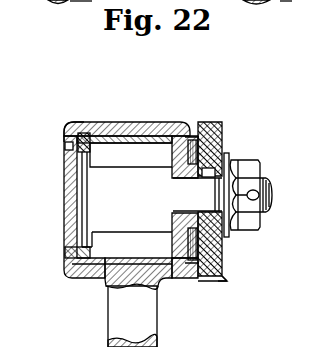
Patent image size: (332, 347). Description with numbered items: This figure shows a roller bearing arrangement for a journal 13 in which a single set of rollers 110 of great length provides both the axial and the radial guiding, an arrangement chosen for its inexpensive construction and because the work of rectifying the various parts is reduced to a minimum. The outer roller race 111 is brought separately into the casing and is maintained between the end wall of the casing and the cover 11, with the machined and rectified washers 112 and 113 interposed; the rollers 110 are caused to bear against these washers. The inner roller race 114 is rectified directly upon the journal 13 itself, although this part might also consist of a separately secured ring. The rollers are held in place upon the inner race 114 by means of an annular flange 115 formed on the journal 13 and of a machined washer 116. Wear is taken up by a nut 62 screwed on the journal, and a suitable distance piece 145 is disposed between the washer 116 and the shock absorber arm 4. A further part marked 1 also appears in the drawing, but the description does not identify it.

The sleeve 1 is at (131, 124).
The shock absorber arm 4 is at (226, 280).
The cover 11 is at (76, 211).
The journal 13 is at (112, 272).
The nut 62 is at (232, 163).
The set of rollers 110 is at (171, 276).
The outer roller race 111 is at (134, 136).
The washer 112 is at (194, 121).
The washer 113 is at (70, 122).
The inner roller race 114 is at (78, 258).
The annular flange 115 is at (90, 185).
The machined washer 116 is at (224, 257).
The distance piece 145 is at (222, 135).